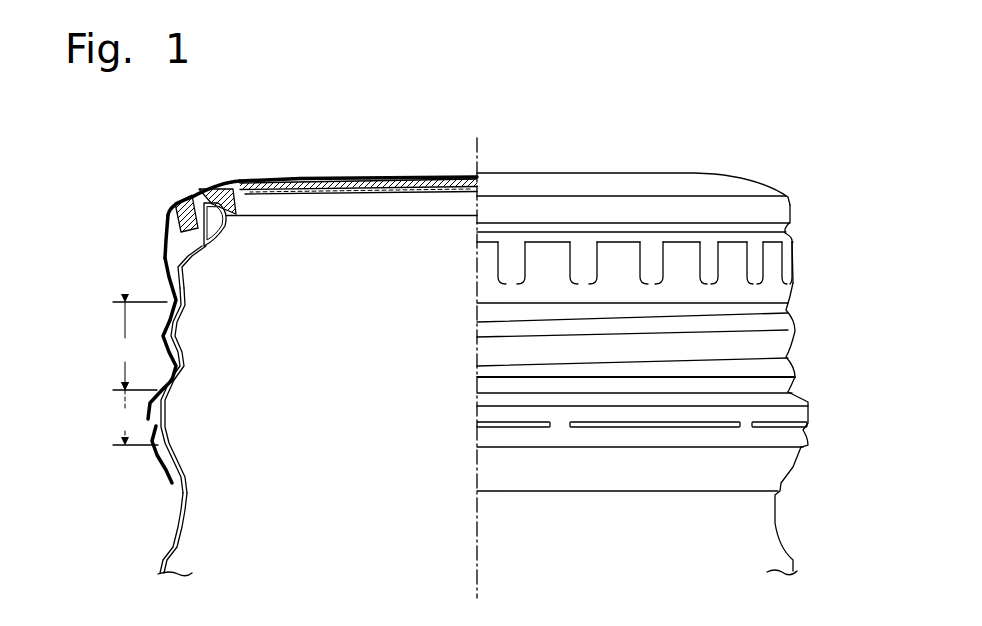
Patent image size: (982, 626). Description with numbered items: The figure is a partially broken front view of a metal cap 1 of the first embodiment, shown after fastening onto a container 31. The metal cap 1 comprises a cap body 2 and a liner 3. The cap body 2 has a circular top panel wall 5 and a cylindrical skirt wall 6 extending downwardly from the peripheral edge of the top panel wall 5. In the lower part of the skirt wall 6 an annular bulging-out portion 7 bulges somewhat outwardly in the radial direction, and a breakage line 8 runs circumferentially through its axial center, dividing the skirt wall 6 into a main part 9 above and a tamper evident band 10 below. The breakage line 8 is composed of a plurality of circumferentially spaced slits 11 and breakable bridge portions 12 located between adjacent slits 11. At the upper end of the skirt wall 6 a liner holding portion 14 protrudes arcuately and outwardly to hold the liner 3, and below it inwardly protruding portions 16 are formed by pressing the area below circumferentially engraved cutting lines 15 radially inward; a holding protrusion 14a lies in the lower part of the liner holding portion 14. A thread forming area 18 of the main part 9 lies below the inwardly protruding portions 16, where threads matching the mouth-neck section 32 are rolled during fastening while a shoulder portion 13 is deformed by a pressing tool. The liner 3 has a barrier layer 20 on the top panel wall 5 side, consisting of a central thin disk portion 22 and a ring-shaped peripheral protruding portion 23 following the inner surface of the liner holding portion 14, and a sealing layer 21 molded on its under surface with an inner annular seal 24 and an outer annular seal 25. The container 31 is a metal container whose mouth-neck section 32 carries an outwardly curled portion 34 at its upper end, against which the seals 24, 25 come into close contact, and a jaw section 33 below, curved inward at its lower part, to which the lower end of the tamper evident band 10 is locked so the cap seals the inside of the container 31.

The metal cap 1 is at (762, 152).
The cap body 2 is at (667, 171).
The liner 3 is at (284, 199).
The top panel wall 5 is at (498, 172).
The skirt wall 6 is at (810, 381).
The annular bulging-out portion 7 is at (135, 417).
The breakage line 8 is at (645, 433).
The main part 9 is at (799, 338).
The tamper evident band 10 is at (796, 470).
The slits 11 is at (690, 430).
The bridge portions 12 is at (556, 430).
The shoulder portion 13 is at (784, 192).
The liner holding portion 14 is at (166, 200).
The holding protrusion 14a is at (165, 232).
The cutting lines 15 is at (546, 241).
The inwardly protruding portions 16 is at (619, 257).
The thread forming area 18 is at (140, 346).
The barrier layer 20 is at (319, 179).
The sealing layer 21 is at (311, 193).
The thin disk portion 22 is at (362, 176).
The peripheral protruding portion 23 is at (175, 210).
The inner annular seal 24 is at (230, 217).
The outer annular seal 25 is at (183, 263).
The container 31 is at (162, 548).
The mouth-neck section 32 is at (216, 246).
The jaw section 33 is at (186, 468).
The curled portion 34 is at (205, 186).